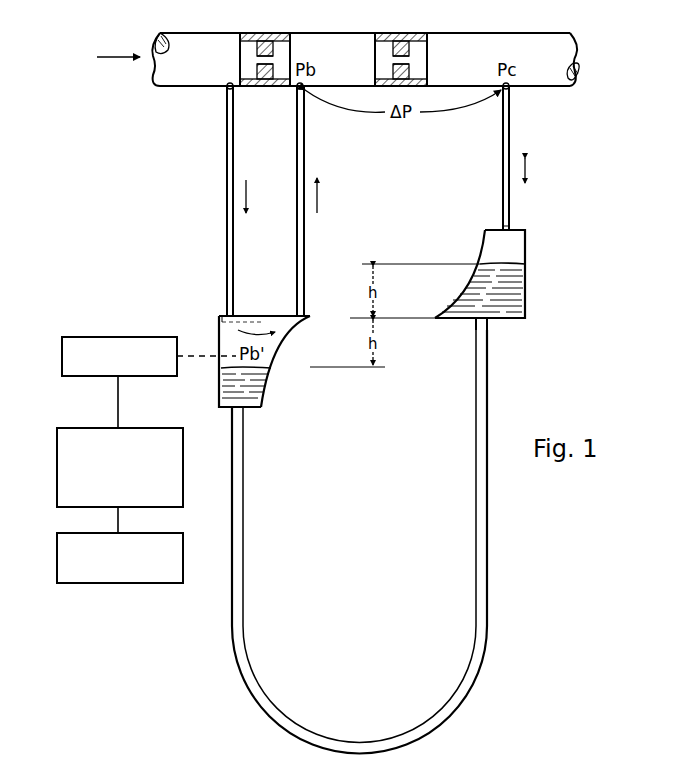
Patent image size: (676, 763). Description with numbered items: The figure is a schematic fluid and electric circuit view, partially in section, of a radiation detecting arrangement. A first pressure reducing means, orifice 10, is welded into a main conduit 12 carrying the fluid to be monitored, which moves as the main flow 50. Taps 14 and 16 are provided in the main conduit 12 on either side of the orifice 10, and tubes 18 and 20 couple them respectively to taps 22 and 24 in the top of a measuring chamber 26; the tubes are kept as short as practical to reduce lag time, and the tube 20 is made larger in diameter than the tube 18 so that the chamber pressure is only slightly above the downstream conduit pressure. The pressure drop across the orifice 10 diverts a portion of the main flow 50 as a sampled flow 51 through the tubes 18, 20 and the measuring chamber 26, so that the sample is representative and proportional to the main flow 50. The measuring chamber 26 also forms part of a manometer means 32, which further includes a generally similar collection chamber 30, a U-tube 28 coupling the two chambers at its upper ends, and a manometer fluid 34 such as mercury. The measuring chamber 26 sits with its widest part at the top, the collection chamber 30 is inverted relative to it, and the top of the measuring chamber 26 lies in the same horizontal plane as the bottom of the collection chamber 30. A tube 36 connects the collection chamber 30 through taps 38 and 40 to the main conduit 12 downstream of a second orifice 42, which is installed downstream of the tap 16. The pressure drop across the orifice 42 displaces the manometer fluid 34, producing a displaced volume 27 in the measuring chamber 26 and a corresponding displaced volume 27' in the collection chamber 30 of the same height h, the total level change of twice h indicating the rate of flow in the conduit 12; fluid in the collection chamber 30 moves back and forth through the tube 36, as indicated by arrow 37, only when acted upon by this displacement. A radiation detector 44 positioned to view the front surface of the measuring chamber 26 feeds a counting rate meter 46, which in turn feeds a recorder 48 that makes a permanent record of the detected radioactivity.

The orifice 10 is at (245, 41).
The main conduit 12 is at (206, 32).
The tap 14 is at (226, 89).
The tap 16 is at (298, 89).
The tube 18 is at (227, 129).
The tube 20 is at (305, 129).
The tap 22 is at (224, 315).
The tap 24 is at (305, 315).
The measuring chamber 26 is at (219, 330).
The displaced volume 27 is at (243, 300).
The displaced volume 27' is at (506, 287).
The U-tube 28 is at (462, 703).
The collection chamber 30 is at (527, 248).
The manometer means 32 is at (496, 320).
The manometer fluid 34 is at (256, 393).
The tube 36 is at (510, 136).
The arrow 37 is at (528, 168).
The tap 38 is at (510, 229).
The tap 40 is at (510, 90).
The orifice 42 is at (380, 45).
The radiation detector 44 is at (62, 356).
The counting rate meter 46 is at (57, 445).
The recorder 48 is at (57, 566).
The main flow 50 is at (115, 57).
The sampled flow 51 is at (247, 197).